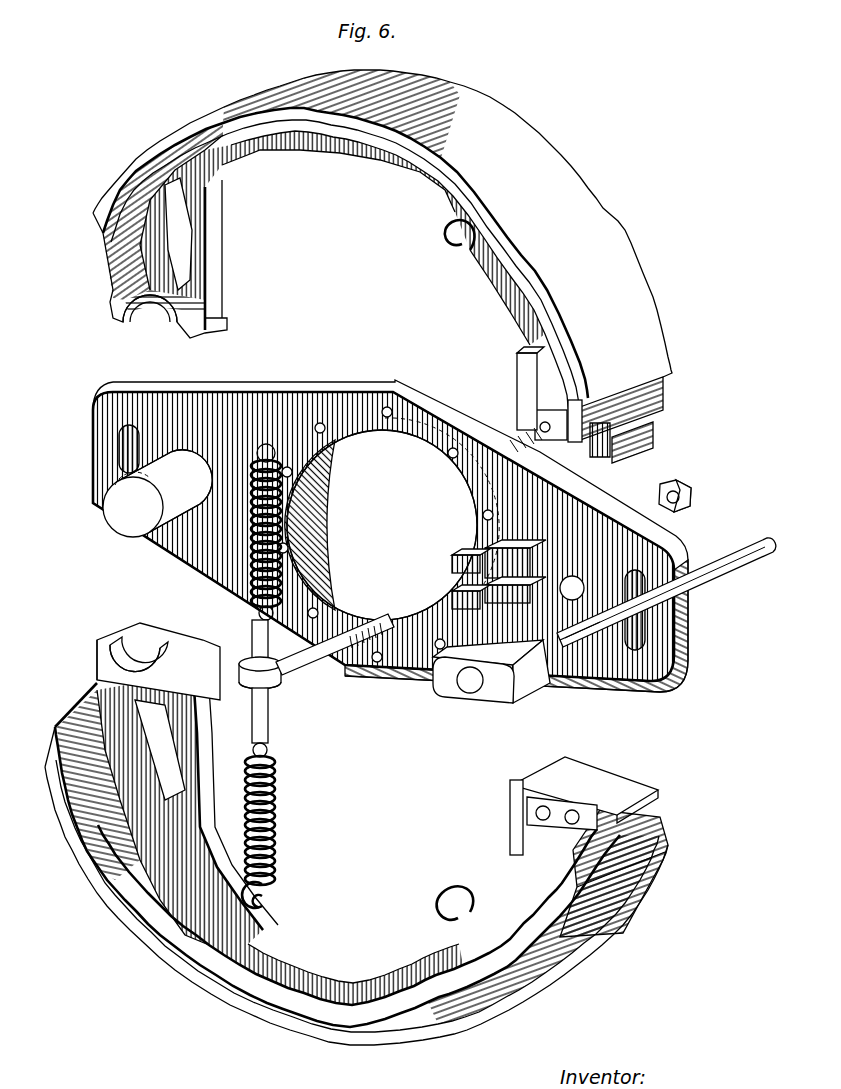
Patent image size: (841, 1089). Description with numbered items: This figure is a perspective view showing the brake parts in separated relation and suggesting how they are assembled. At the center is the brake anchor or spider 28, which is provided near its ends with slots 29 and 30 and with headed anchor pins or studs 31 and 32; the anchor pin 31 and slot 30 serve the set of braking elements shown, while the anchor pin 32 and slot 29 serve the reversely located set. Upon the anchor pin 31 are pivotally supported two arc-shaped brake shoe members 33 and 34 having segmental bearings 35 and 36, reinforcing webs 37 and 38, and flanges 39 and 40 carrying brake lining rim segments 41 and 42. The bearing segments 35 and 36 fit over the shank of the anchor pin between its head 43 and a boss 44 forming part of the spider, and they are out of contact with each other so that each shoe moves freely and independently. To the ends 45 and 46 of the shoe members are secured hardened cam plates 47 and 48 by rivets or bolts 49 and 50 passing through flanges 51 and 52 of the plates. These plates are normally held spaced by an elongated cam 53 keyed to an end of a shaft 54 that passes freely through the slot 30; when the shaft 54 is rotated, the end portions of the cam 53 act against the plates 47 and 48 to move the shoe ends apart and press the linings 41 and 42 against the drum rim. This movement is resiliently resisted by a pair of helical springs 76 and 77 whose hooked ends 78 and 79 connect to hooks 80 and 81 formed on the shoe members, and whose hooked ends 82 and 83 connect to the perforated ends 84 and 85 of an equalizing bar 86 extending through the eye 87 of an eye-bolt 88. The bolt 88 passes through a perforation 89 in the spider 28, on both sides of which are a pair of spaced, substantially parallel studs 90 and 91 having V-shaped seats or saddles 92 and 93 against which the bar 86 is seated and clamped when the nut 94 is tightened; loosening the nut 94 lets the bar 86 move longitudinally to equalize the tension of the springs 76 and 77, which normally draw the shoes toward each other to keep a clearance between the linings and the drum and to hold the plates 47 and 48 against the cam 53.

The brake anchor or spider 28 is at (369, 522).
The slot 29 is at (92, 446).
The slot 30 is at (642, 636).
The anchor pin 31 is at (125, 547).
The anchor pin 32 is at (578, 582).
The brake shoe member 33 is at (108, 268).
The brake shoe member 34 is at (78, 697).
The segmental bearing 35 is at (158, 322).
The segmental bearing 36 is at (152, 630).
The reinforcing web 37 is at (223, 170).
The reinforcing web 38 is at (290, 930).
The flange 39 is at (388, 150).
The flange 40 is at (357, 896).
The brake lining rim segment 41 is at (382, 234).
The brake lining rim segment 42 is at (334, 1040).
The head 43 is at (168, 505).
The boss 44 is at (200, 475).
The shoe member end 45 is at (648, 433).
The shoe member end 46 is at (650, 816).
The cam plate 47 is at (580, 444).
The cam plate 48 is at (607, 780).
The rivets or bolts 49 is at (552, 440).
The rivets or bolts 50 is at (572, 810).
The flange 51 is at (585, 393).
The flange 52 is at (510, 824).
The elongated cam 53 is at (493, 706).
The shaft 54 is at (600, 668).
The helical spring 76 is at (255, 572).
The helical spring 77 is at (280, 806).
The hooked end 78 is at (330, 460).
The hooked end 79 is at (273, 897).
The hook 80 is at (446, 247).
The hook 81 is at (436, 922).
The hooked end 82 is at (256, 613).
The hooked end 83 is at (254, 746).
The perforated end 84 is at (255, 638).
The perforated end 85 is at (255, 718).
The equalizing bar 86 is at (256, 689).
The eye 87 is at (283, 678).
The eye-bolt 88 is at (336, 652).
The perforation 89 is at (505, 574).
The stud 90 is at (490, 553).
The stud 91 is at (480, 586).
The V-shaped seat or saddle 92 is at (456, 560).
The V-shaped seat or saddle 93 is at (462, 608).
The nut 94 is at (692, 497).